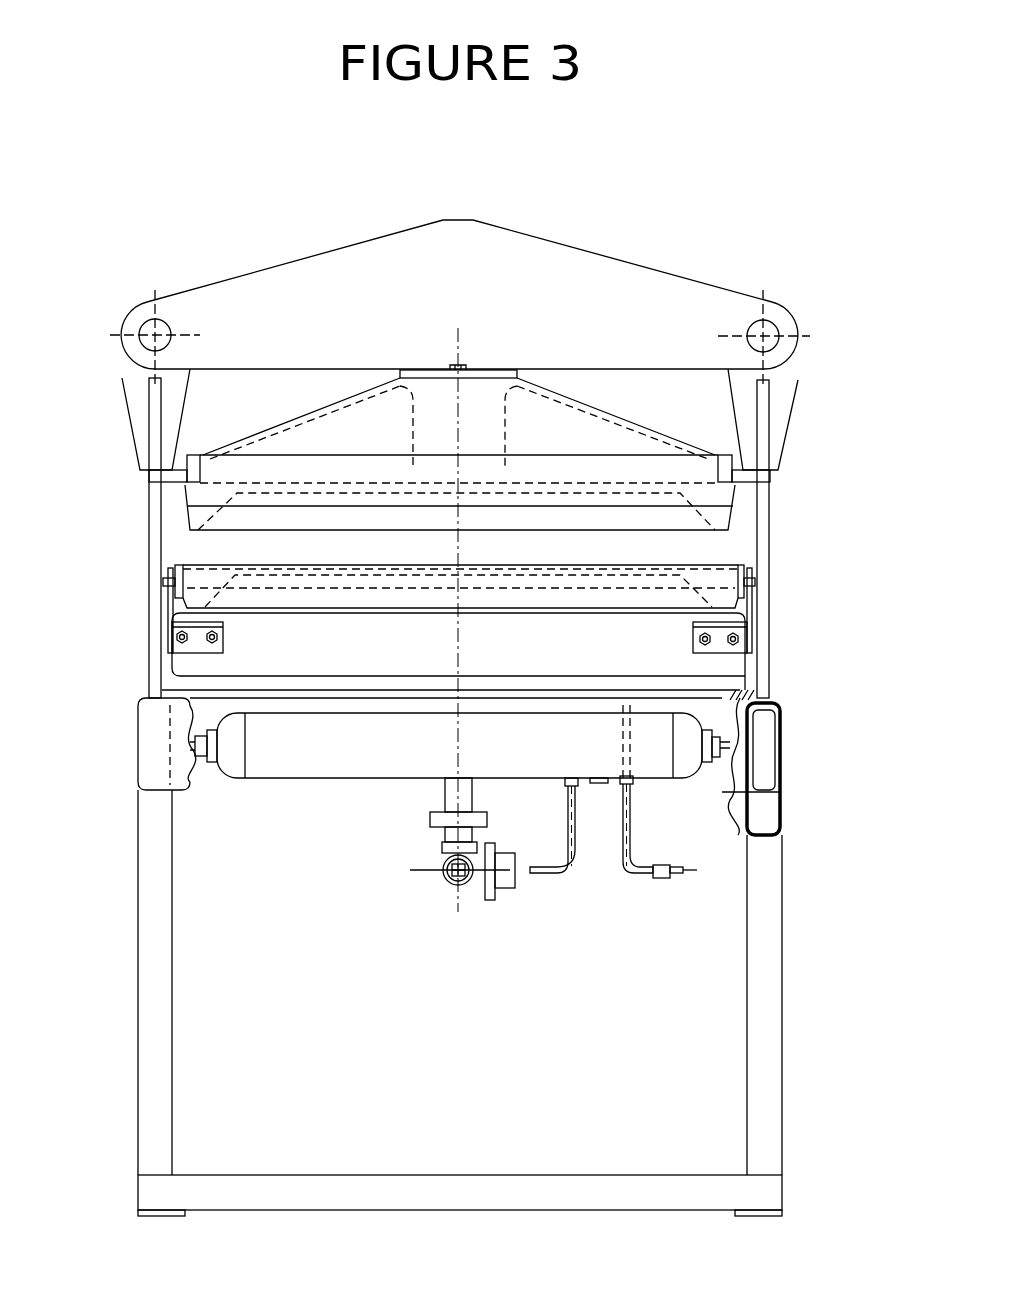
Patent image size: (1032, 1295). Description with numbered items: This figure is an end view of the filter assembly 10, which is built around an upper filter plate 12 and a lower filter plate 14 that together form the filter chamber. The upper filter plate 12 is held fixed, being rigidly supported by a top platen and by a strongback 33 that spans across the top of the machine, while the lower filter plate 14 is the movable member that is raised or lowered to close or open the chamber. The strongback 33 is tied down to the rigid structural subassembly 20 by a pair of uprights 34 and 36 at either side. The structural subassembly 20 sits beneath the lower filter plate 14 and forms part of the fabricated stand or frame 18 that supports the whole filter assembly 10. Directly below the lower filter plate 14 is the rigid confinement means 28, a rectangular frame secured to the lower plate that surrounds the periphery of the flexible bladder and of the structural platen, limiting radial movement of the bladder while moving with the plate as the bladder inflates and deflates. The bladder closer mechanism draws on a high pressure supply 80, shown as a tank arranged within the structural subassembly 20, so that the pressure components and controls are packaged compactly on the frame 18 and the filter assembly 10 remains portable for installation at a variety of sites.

The filter assembly 10 is at (797, 230).
The upper filter plate 12 is at (183, 517).
The lower filter plate 14 is at (188, 560).
The frame 18 is at (137, 920).
The rigid structural subassembly 20 is at (137, 752).
The rigid confinement means 28 is at (350, 663).
The strongback 33 is at (653, 275).
The upright 34 is at (147, 658).
The upright 36 is at (768, 558).
The high pressure supply 80 is at (273, 773).